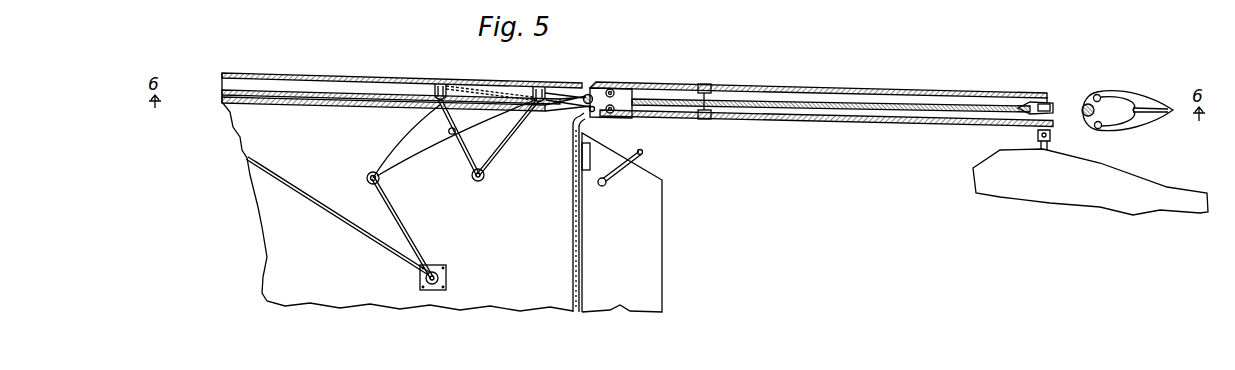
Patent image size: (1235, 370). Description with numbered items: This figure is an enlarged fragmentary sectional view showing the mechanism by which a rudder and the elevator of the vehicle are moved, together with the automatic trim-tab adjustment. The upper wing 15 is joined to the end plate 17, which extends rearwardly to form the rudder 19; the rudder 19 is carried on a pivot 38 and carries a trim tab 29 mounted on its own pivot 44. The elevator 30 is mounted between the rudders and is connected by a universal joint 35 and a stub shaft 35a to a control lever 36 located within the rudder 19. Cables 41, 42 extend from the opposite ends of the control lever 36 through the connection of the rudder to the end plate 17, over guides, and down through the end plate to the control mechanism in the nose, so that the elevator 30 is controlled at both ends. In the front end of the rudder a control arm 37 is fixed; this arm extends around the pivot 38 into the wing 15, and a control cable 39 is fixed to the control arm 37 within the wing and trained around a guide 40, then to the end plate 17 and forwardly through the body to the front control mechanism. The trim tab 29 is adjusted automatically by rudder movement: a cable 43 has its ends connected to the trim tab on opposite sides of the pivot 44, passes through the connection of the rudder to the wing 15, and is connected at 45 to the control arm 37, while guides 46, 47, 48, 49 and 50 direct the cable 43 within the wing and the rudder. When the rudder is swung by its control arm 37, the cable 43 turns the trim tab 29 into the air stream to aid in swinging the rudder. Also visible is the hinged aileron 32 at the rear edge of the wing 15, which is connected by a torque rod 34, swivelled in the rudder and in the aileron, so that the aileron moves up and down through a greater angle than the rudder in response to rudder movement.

The upper wing 15 is at (240, 136).
The end plate 17 is at (263, 75).
The rudder 19 is at (776, 116).
The trim tab 29 is at (1135, 92).
The elevator 30 is at (974, 171).
The aileron 32 is at (657, 227).
The torque rod 34 is at (643, 155).
The universal joint 35 is at (1036, 136).
The stub shaft 35a is at (1043, 151).
The control lever 36 is at (1056, 110).
The control arm 37 is at (412, 140).
The pivot 38 is at (584, 104).
The control cable 39 is at (405, 209).
The guide 40 is at (447, 278).
The cable 41 is at (222, 101).
The cable 42 is at (224, 91).
The cable 43 is at (800, 86).
The pivot 44 is at (1094, 97).
The connection 45 is at (456, 133).
The guide 46 is at (476, 181).
The guide 47 is at (437, 91).
The guide 48 is at (537, 92).
The guide 49 is at (614, 106).
The guide 50 is at (708, 84).